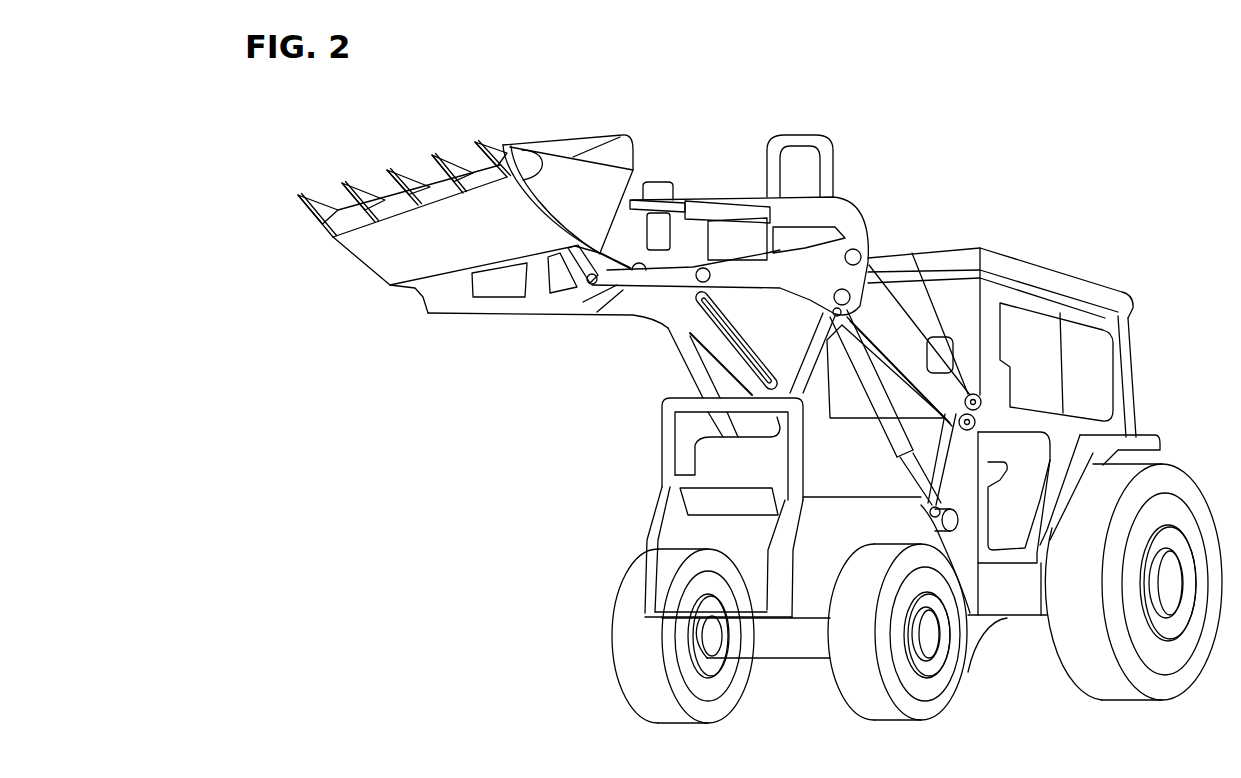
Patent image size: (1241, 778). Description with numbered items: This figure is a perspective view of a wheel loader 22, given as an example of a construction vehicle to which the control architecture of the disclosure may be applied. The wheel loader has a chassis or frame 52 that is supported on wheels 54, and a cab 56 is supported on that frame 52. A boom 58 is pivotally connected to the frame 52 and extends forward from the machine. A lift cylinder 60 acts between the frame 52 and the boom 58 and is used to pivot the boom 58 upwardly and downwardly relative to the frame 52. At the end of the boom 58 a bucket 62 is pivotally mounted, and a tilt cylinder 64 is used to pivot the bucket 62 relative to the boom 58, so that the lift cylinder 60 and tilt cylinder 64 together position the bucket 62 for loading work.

The wheel loader 22 is at (1004, 204).
The chassis or frame 52 is at (1020, 605).
The wheels 54 is at (850, 690).
The cab 56 is at (1130, 363).
The boom 58 is at (853, 243).
The lift cylinder 60 is at (878, 342).
The bucket 62 is at (522, 150).
The tilt cylinder 64 is at (738, 200).